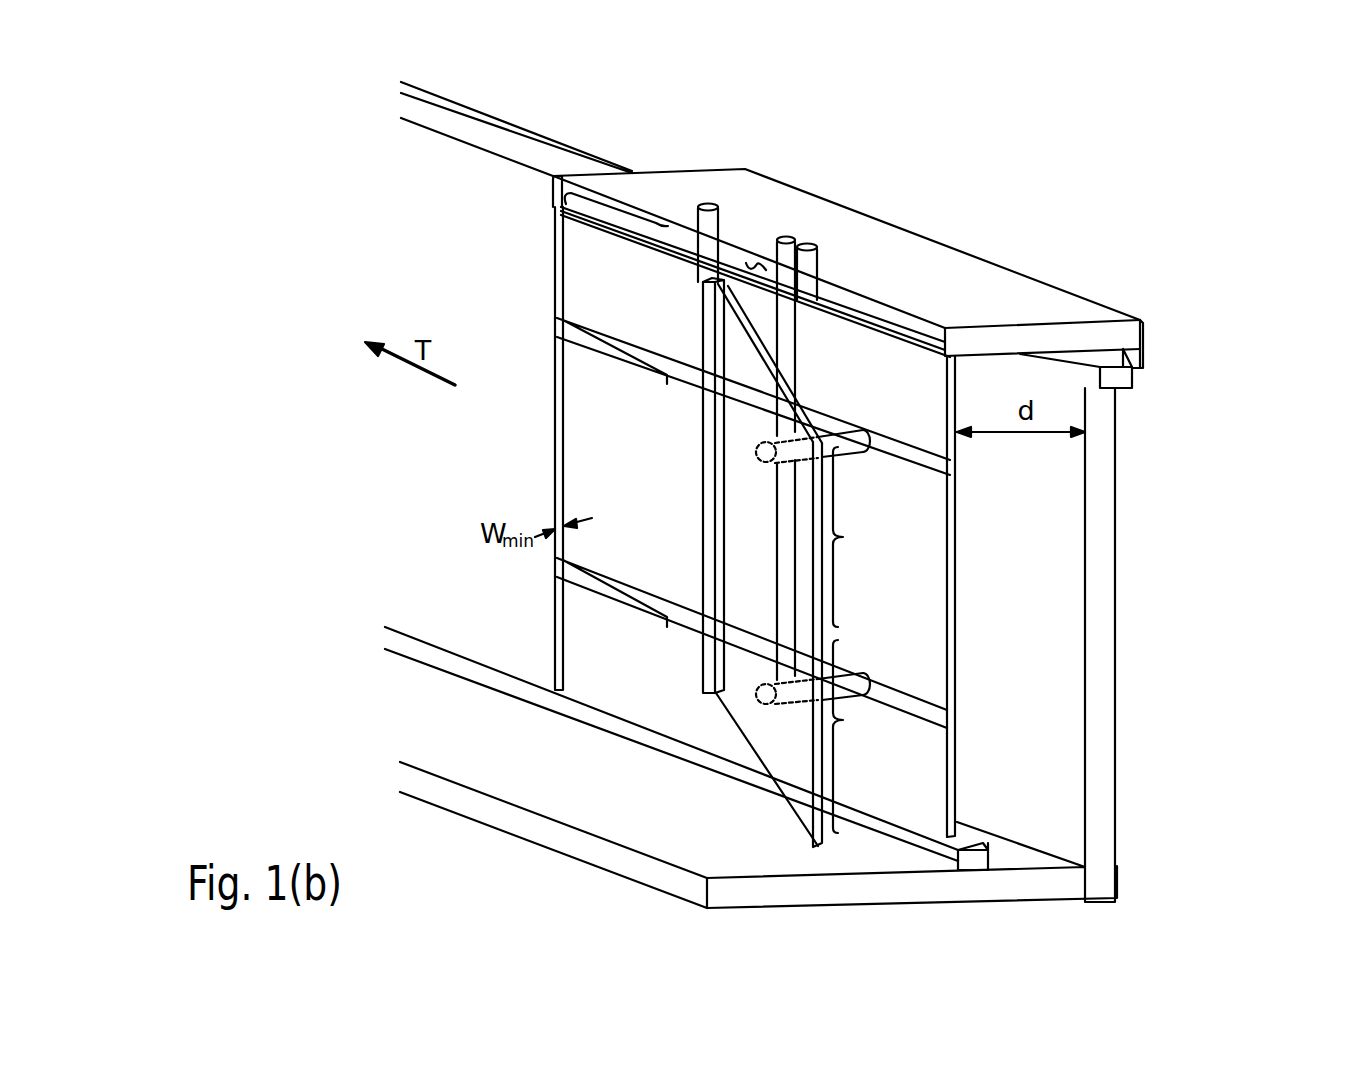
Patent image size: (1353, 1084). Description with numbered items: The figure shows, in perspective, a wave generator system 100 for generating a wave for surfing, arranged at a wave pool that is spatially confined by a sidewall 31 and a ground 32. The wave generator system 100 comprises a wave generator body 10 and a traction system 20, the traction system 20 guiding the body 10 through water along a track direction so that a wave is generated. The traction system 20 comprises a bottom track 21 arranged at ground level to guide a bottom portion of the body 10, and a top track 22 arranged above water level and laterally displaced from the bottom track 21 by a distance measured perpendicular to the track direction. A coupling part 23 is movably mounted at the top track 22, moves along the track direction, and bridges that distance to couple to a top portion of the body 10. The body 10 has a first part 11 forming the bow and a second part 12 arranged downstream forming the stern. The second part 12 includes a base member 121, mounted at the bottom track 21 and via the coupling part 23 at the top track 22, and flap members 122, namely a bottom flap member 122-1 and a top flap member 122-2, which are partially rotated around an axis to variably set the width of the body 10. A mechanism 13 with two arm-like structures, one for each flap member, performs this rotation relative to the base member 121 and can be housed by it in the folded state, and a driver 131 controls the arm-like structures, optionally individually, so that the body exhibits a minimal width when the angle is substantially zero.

The wave generator system 100 is at (727, 363).
The first part 11 is at (661, 223).
The second part 12 is at (836, 297).
The driver 131 is at (706, 204).
The coupling part 23 is at (993, 293).
The wave generator body 10 is at (701, 581).
The base member 121 is at (934, 630).
The flap member 122 is at (815, 617).
The bottom flap member 122-1 is at (845, 538).
The top flap member 122-2 is at (845, 721).
The mechanism 13 is at (850, 440).
The traction system 20 is at (995, 651).
The sidewall 31 is at (1101, 628).
The top track 22 is at (1118, 378).
The ground 32 is at (856, 889).
The bottom track 21 is at (973, 858).